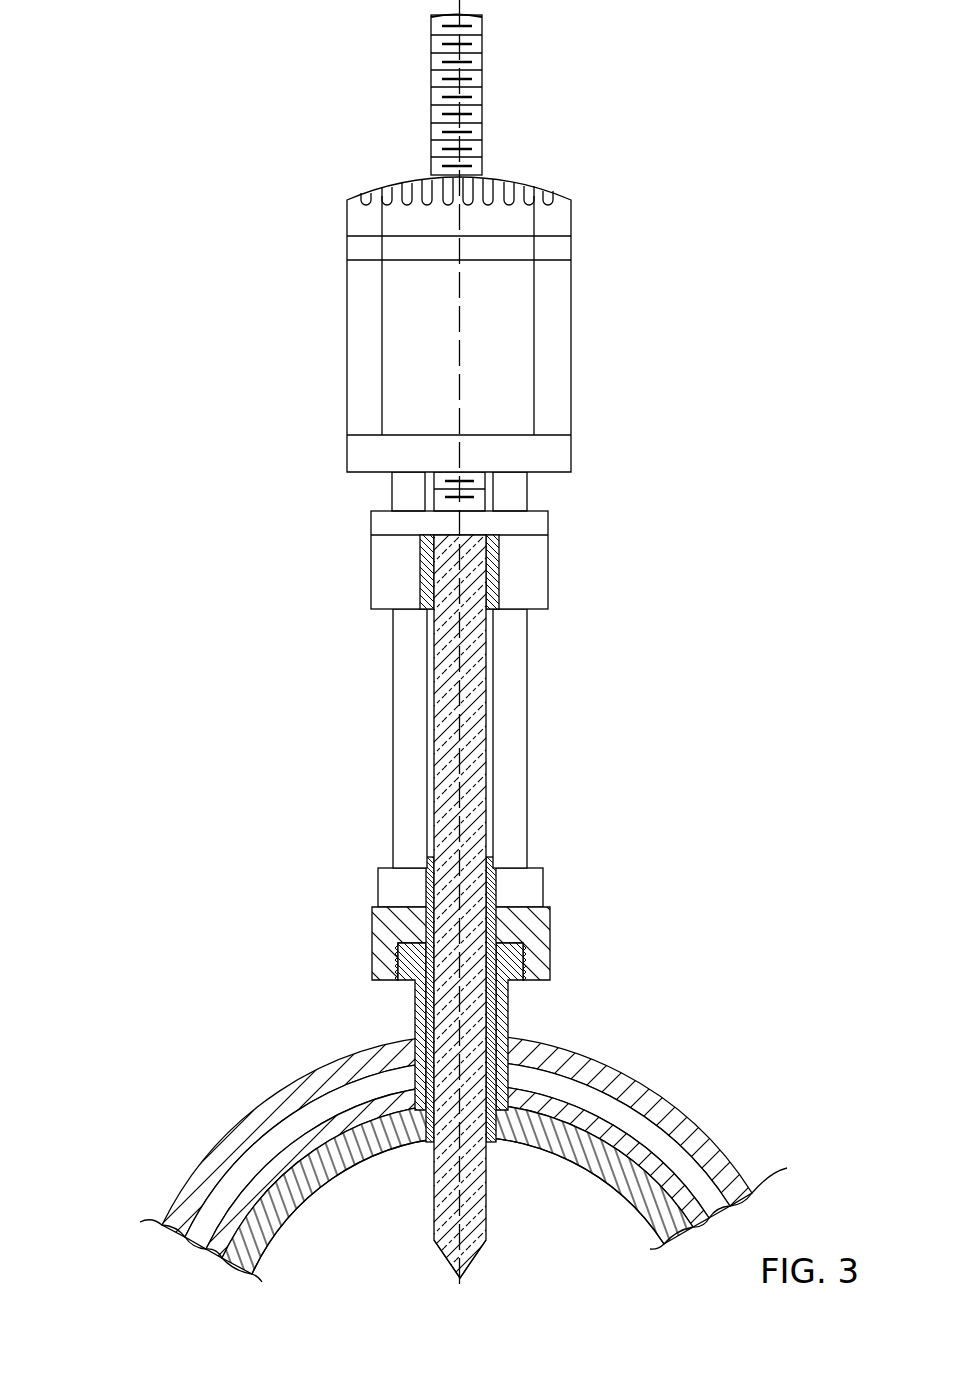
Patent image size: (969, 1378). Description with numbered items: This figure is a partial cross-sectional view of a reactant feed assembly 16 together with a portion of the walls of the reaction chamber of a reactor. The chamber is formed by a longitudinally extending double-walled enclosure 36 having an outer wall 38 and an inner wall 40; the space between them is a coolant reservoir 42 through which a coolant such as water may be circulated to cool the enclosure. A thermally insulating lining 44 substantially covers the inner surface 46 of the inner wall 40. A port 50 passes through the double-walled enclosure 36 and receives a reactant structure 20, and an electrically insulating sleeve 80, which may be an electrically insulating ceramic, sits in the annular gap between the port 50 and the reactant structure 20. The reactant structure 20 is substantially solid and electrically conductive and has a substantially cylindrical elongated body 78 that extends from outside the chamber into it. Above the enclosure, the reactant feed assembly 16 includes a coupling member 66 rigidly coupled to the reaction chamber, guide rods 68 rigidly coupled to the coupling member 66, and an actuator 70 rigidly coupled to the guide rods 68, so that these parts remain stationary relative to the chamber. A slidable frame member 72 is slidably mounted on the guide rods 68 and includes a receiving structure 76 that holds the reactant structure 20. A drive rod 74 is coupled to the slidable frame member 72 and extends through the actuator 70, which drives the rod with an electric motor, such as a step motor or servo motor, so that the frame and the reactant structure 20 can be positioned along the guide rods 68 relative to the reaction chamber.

The reactant feed assembly 16 is at (684, 392).
The reactant structure 20 is at (437, 1243).
The double-walled enclosure 36 is at (428, 1143).
The outer wall 38 is at (200, 1182).
The inner wall 40 is at (588, 1118).
The coolant reservoir 42 is at (698, 1178).
The thermally insulating lining 44 is at (577, 1153).
The inner surface 46 is at (640, 1167).
The port 50 is at (430, 1150).
The coupling member 66 is at (525, 888).
The guide rods 68 is at (515, 773).
The actuator 70 is at (346, 330).
The slidable frame member 72 is at (525, 585).
The drive rod 74 is at (478, 125).
The receiving structure 76 is at (422, 568).
The elongated body 78 is at (437, 662).
The electrically insulating sleeve 80 is at (418, 1027).